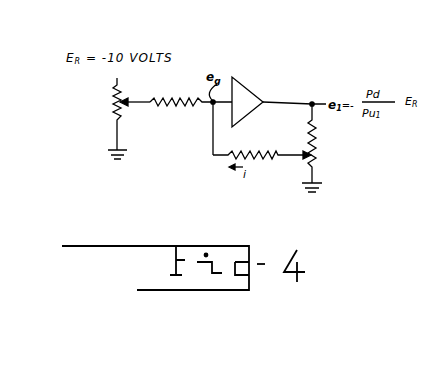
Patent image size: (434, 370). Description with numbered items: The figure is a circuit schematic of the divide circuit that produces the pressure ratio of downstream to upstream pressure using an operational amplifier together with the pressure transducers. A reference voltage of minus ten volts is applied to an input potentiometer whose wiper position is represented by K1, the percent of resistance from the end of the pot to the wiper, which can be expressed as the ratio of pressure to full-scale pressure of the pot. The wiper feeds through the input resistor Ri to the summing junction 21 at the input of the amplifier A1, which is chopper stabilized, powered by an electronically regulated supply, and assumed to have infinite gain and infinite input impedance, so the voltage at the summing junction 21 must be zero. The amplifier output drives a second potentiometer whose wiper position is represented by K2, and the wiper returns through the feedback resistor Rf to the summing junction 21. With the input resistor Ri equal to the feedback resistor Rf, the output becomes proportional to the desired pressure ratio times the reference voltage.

The summing junction 21 is at (210, 106).
The percent of resistance from the end of the input pot to the wiper K1 is at (133, 121).
The percent of resistance from the end of the feedback pot to the wiper K2 is at (288, 169).
The operational amplifier A1 is at (247, 102).
The input resistor Ri is at (181, 94).
The feedback resistor Rf is at (258, 148).